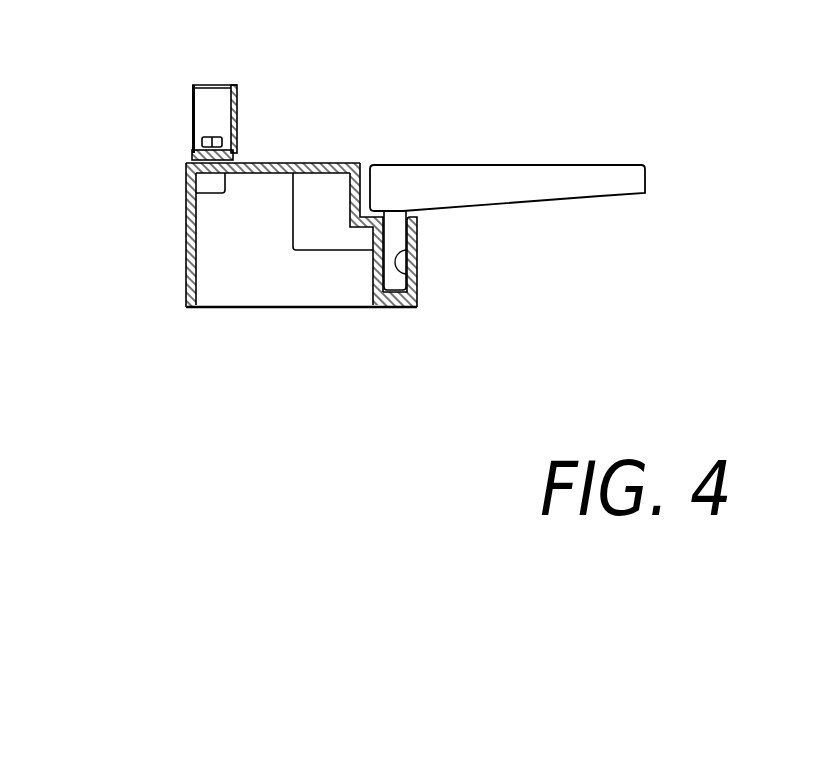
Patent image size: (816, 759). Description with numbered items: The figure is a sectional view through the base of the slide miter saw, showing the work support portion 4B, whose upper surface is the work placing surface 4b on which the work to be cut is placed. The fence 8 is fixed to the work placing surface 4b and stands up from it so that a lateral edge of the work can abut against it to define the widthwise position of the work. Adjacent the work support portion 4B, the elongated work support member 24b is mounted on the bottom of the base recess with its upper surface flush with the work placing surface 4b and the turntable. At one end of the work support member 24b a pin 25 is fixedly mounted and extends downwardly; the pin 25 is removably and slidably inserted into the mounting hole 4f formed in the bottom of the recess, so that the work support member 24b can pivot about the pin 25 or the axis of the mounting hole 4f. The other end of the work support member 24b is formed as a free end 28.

The work support portion 4B is at (184, 231).
The work placing surface 4b is at (308, 163).
The mounting hole 4f is at (405, 273).
The fence 8 is at (236, 108).
The work support member 24b is at (543, 165).
The pin 25 is at (393, 240).
The free end 28 is at (632, 183).